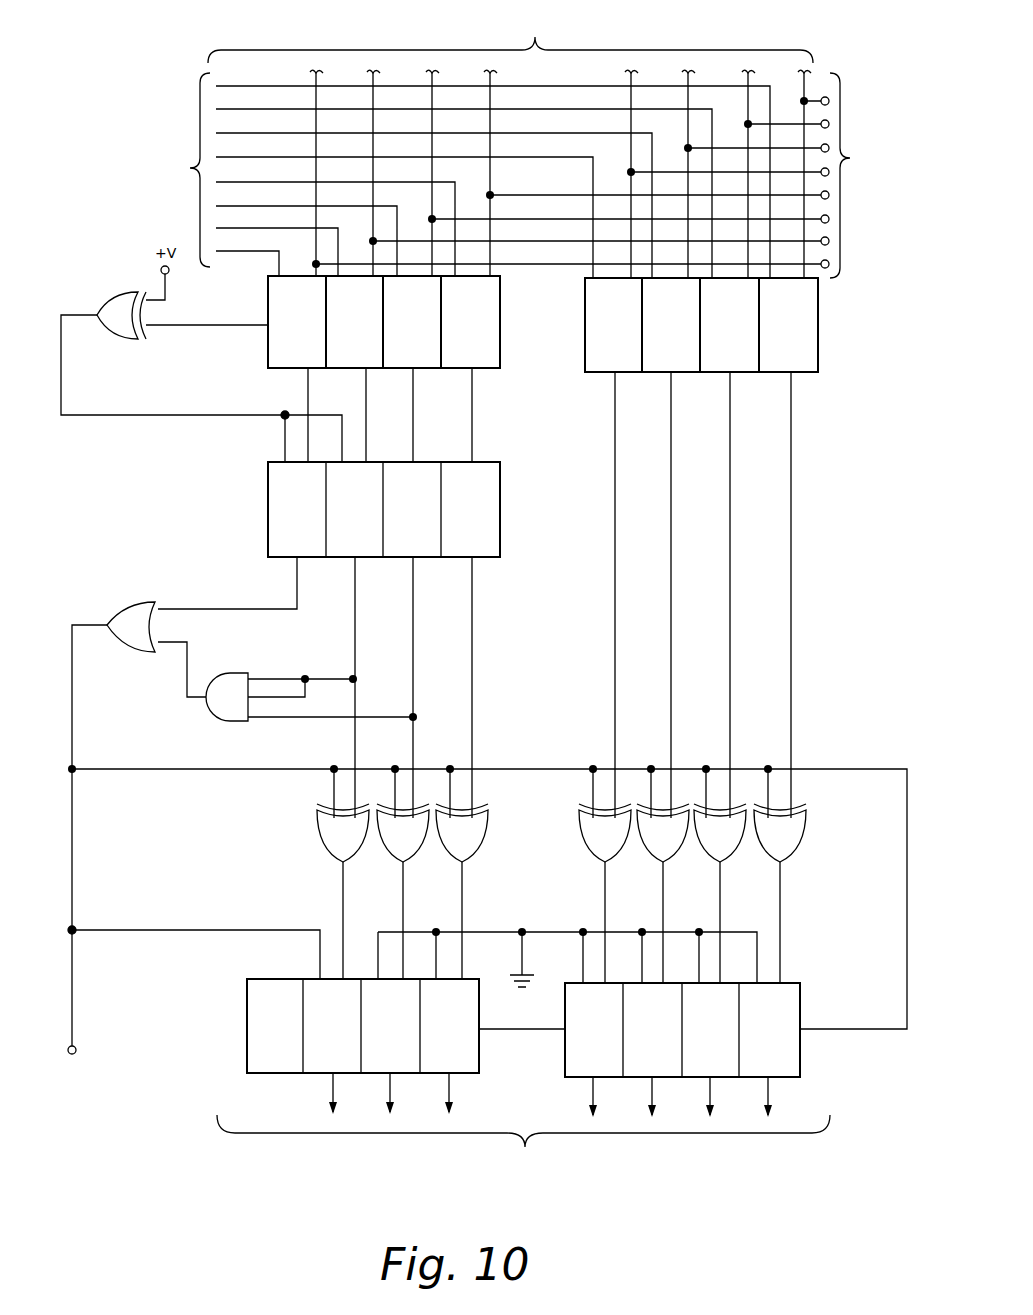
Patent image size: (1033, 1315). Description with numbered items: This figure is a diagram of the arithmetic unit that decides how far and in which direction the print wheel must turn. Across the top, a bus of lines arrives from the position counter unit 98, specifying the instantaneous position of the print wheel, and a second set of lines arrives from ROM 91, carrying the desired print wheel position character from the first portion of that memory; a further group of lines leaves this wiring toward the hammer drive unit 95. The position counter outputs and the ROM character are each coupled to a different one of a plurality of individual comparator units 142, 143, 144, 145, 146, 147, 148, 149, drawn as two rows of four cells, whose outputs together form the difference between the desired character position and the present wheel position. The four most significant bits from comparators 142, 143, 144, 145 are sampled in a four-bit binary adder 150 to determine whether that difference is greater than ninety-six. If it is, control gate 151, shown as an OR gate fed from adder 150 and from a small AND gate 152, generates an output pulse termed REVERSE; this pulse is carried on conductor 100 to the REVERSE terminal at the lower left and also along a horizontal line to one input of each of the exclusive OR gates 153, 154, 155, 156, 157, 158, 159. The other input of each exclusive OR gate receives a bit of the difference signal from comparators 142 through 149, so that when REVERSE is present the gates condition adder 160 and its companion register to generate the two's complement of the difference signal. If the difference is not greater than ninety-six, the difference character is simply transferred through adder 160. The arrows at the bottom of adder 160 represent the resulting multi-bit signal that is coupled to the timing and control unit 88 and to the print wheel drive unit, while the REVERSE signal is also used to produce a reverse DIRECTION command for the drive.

The ROM 91 is at (510, 145).
The position counter unit 98 is at (418, 175).
The hammer drive unit 95 is at (633, 175).
The comparator unit 142 is at (287, 352).
The comparator unit 143 is at (358, 348).
The comparator unit 144 is at (403, 348).
The comparator unit 145 is at (467, 348).
The comparator unit 146 is at (605, 357).
The comparator unit 147 is at (668, 357).
The comparator unit 148 is at (728, 357).
The comparator unit 149 is at (790, 355).
The four-bit binary adder 150 is at (283, 505).
The control gate 151 is at (138, 612).
The gate 152 is at (233, 680).
The exclusive OR gate 153 is at (333, 833).
The exclusive OR gate 154 is at (403, 843).
The exclusive OR gate 155 is at (460, 843).
The exclusive OR gate 156 is at (600, 840).
The exclusive OR gate 157 is at (660, 840).
The exclusive OR gate 158 is at (717, 840).
The exclusive OR gate 159 is at (778, 840).
The adder 160 is at (263, 1023).
The conductor 100 is at (73, 1013).
The timing and control unit 88 is at (523, 1159).